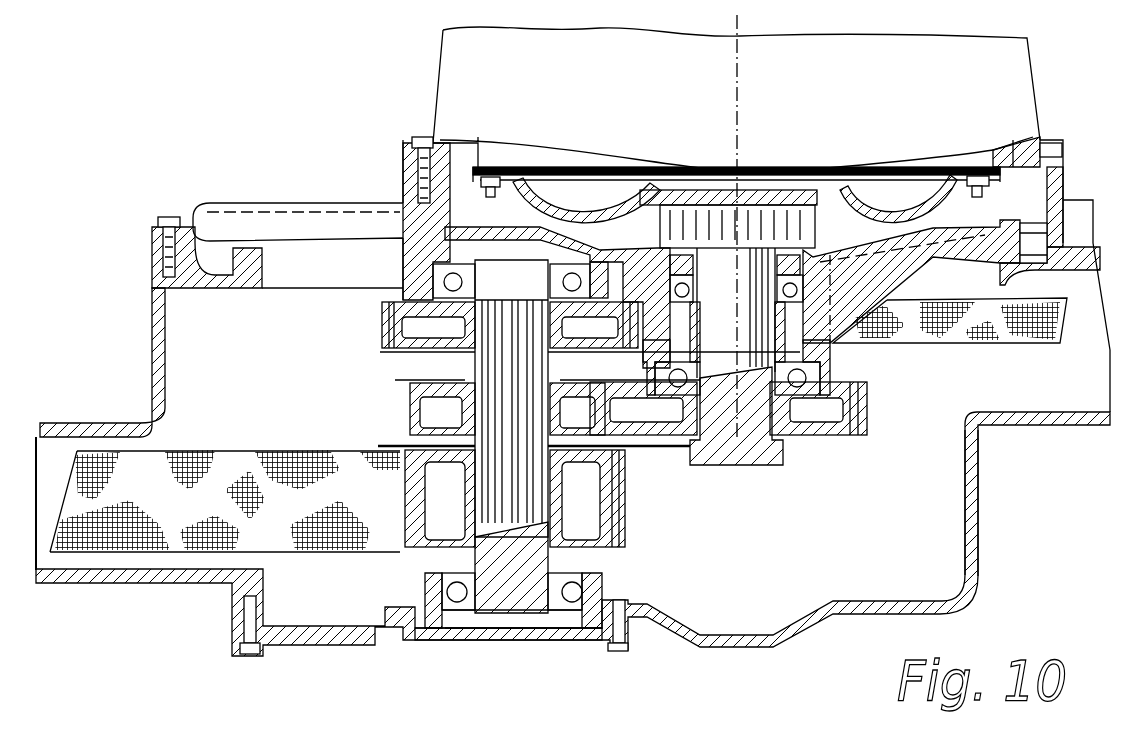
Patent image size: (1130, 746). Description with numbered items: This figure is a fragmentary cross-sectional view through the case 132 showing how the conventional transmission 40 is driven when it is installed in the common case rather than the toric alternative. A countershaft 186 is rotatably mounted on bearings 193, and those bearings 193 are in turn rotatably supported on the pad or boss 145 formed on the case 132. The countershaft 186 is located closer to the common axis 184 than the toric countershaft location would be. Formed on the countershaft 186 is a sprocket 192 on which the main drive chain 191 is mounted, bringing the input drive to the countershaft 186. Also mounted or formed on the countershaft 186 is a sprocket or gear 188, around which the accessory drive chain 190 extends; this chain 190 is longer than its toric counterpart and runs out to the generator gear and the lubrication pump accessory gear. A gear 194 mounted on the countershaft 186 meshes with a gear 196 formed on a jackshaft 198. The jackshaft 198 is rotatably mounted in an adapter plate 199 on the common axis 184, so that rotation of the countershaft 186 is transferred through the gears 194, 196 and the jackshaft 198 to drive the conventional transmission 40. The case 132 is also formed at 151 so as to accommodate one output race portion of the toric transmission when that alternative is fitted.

The conventional transmission 40 is at (1007, 78).
The common axis 184 is at (737, 67).
The adapter plate 199 is at (890, 273).
The accessory drive chain 190 is at (962, 343).
The gear 196 is at (867, 413).
The case formation 151 is at (947, 473).
The case 132 is at (977, 524).
The jackshaft 198 is at (753, 465).
The sprocket 192 is at (593, 497).
The countershaft 186 is at (530, 564).
The bearings 193 is at (595, 588).
The pad or boss 145 is at (527, 640).
The sprocket or gear 188 is at (388, 316).
The gear 194 is at (410, 405).
The main drive chain 191 is at (233, 473).